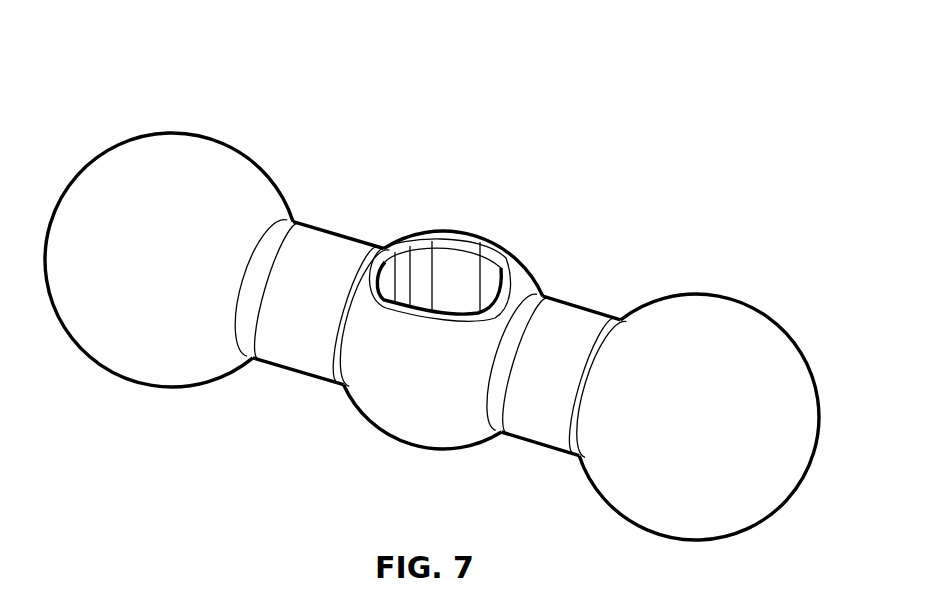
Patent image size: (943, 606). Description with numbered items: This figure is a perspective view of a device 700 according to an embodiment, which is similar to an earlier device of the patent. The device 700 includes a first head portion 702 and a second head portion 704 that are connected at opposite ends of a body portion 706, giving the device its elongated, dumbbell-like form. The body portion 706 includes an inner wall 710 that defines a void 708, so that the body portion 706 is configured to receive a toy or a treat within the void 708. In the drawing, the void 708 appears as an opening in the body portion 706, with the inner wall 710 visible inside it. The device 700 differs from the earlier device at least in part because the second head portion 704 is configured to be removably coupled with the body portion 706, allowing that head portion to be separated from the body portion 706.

The device 700 is at (137, 88).
The first head portion 702 is at (241, 152).
The second head portion 704 is at (761, 310).
The body portion 706 is at (443, 218).
The void 708 is at (478, 247).
The inner wall 710 is at (402, 265).